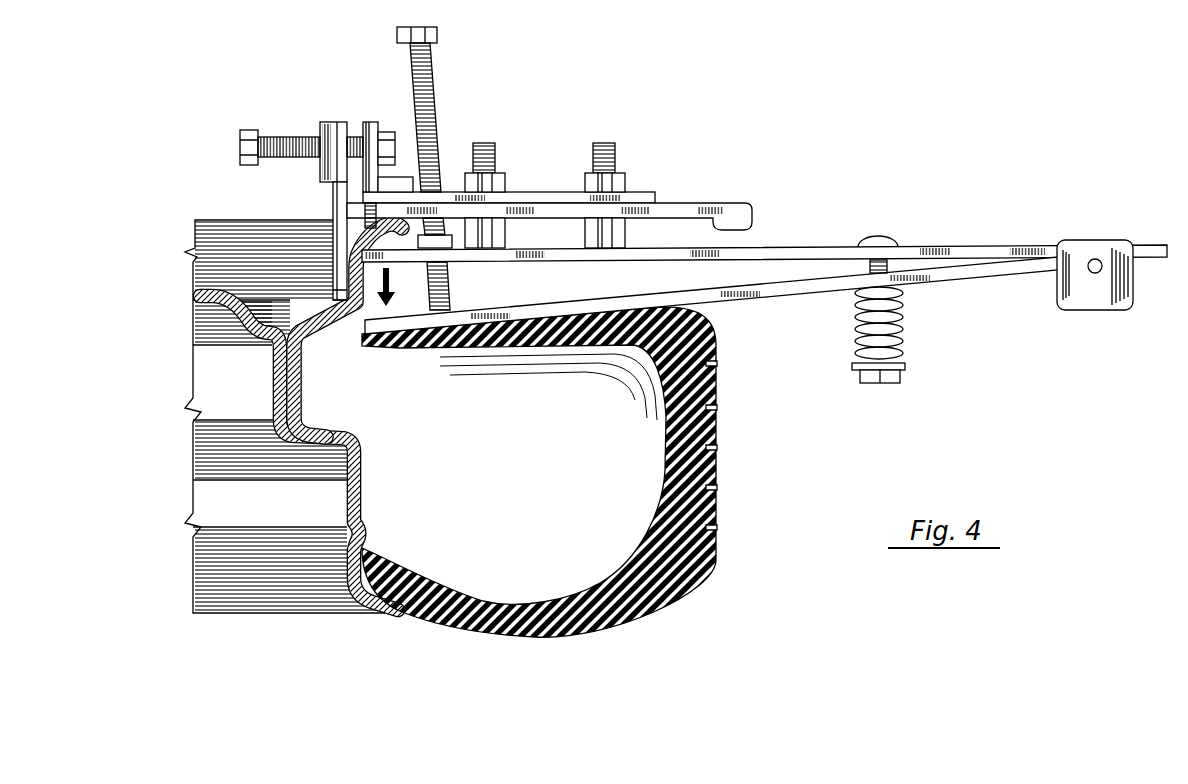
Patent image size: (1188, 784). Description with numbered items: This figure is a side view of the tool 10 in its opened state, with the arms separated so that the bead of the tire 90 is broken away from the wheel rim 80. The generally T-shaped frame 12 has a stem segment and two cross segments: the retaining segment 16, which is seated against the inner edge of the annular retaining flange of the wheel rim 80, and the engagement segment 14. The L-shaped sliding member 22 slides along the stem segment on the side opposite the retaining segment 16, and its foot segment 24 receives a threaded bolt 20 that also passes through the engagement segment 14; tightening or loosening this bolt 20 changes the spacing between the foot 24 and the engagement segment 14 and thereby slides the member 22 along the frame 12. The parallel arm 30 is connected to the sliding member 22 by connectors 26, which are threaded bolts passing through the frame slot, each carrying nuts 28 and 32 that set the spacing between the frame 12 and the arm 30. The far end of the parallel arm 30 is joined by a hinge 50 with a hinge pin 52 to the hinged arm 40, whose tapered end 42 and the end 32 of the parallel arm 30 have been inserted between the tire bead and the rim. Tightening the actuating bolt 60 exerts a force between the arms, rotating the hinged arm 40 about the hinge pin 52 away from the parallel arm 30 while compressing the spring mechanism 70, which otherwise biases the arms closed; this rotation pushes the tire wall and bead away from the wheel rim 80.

The tool 10 is at (930, 222).
The frame 12 is at (698, 203).
The engagement segment 14 is at (333, 200).
The retaining segment 16 is at (322, 302).
The threaded bolt 20 is at (297, 138).
The sliding member 22 is at (640, 192).
The foot segment 24 is at (368, 122).
The connectors 26 is at (592, 152).
The nuts 28 is at (585, 182).
The parallel arm 30 is at (765, 250).
The nuts / end of parallel arm 32 is at (585, 233).
The hinged arm 40 is at (758, 292).
The end of hinged arm 42 is at (389, 322).
The hinge 50 is at (1110, 310).
The hinge pin 52 is at (1097, 258).
The actuating bolt 60 is at (434, 95).
The spring mechanism 70 is at (902, 332).
The wheel rim 80 is at (361, 485).
The tire 90 is at (387, 352).